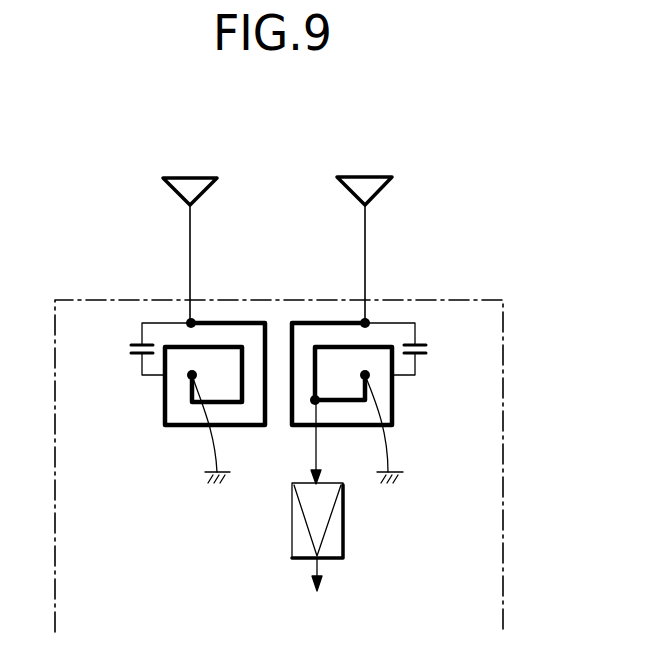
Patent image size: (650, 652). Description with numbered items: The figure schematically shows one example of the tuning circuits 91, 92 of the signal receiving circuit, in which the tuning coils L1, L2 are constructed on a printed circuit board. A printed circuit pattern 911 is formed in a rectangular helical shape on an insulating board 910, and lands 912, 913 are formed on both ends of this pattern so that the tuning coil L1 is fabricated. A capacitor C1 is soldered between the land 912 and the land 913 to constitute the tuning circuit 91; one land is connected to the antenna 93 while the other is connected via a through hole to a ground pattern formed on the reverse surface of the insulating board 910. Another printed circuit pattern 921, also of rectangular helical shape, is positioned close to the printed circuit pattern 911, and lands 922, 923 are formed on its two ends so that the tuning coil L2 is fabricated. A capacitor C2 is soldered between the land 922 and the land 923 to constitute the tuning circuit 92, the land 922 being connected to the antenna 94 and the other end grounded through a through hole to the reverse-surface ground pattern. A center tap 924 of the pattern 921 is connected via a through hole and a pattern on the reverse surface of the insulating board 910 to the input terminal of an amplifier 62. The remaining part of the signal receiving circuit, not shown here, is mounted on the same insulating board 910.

The amplifier 62 is at (345, 543).
The tuning circuit 91 is at (204, 537).
The tuning circuit 92 is at (423, 537).
The antenna 93 is at (190, 241).
The antenna 94 is at (365, 241).
The insulating board 910 is at (503, 447).
The printed circuit pattern 911 is at (190, 425).
The land 912 is at (191, 323).
The land 913 is at (192, 375).
The printed circuit pattern 921 is at (394, 415).
The land 922 is at (365, 323).
The land 923 is at (365, 375).
The center tap 924 is at (315, 402).
The capacitor C1 is at (133, 345).
The capacitor C2 is at (425, 345).
The tuning coil L1 is at (253, 461).
The tuning coil L2 is at (368, 461).